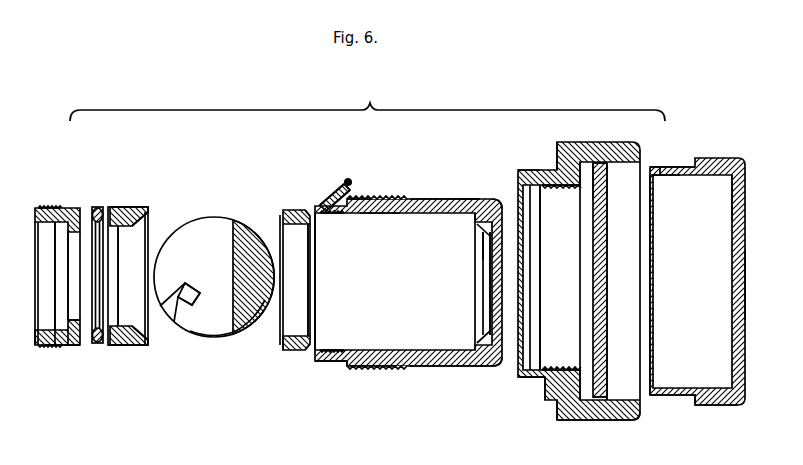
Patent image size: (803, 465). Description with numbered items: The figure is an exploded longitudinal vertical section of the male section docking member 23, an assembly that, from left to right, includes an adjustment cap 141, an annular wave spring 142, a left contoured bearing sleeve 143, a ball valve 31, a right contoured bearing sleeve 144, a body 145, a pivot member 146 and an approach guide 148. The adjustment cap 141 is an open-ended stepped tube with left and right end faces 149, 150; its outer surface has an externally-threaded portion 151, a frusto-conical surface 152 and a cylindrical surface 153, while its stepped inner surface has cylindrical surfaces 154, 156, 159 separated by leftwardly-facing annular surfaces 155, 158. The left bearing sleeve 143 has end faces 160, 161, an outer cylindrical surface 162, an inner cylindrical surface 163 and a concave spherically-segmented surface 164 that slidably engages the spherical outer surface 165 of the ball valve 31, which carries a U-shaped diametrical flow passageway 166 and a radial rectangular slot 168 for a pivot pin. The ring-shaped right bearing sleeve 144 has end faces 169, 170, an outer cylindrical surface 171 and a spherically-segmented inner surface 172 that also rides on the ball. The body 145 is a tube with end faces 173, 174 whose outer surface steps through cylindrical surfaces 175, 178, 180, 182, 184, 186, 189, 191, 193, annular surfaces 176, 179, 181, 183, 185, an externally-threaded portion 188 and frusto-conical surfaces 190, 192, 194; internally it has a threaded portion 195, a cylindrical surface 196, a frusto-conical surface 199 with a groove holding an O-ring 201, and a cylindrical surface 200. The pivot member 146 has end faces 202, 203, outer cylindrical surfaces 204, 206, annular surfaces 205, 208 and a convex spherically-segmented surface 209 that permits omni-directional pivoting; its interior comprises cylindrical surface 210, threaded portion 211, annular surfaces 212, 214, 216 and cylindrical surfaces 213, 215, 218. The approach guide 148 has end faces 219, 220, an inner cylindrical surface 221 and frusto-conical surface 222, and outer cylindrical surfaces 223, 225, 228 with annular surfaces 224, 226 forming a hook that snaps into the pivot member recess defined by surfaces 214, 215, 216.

The male section docking member 23 is at (367, 102).
The ball valve 31 is at (210, 213).
The adjustment cap 141 is at (57, 196).
The annular wave spring 142 is at (103, 201).
The left contoured bearing sleeve 143 is at (130, 201).
The right contoured bearing sleeve 144 is at (283, 206).
The body 145 is at (403, 193).
The pivot member 146 is at (574, 137).
The approach guide 148 is at (726, 146).
The left end face 149 is at (37, 341).
The right end face 150 is at (74, 344).
The externally-threaded portion 151 is at (58, 346).
The frusto-conical surface 152 is at (56, 350).
The outwardly-facing horizontal cylindrical surface 153 is at (67, 346).
The inwardly-facing horizontal cylindrical surface 154 is at (40, 206).
The leftwardly-facing annular vertical surface 155 is at (50, 346).
The inwardly-facing horizontal cylindrical surface 156 is at (67, 206).
The leftwardly-facing annular vertical surface 158 is at (62, 348).
The inwardly-facing horizontal cylindrical surface 159 is at (78, 230).
The left end face 160 is at (106, 346).
The right end face 161 is at (148, 346).
The outwardly-facing horizontal cylindrical surface 162 is at (131, 347).
The inwardly-facing horizontal cylindrical surface 163 is at (120, 262).
The annular concave spherically-segmented surface 164 is at (138, 237).
The spherical outer surface 165 is at (257, 343).
The U-shaped diametrical flow passageway 166 is at (200, 336).
The radially-extending rectangular slot 168 is at (186, 303).
The left end face 169 is at (282, 343).
The right end face 170 is at (308, 352).
The outwardly-facing horizontal cylindrical surface 171 is at (304, 349).
The inner surface 172 is at (303, 212).
The left end face 173 is at (317, 264).
The right end face 174 is at (483, 198).
The outwardly-facing horizontal cylindrical surface 175 is at (320, 362).
The leftwardly-facing annular vertical surface 176 is at (334, 199).
The outwardly-facing horizontal cylindrical surface 178 is at (343, 368).
The leftwardly-facing annular vertical surface 179 is at (338, 188).
The outwardly-facing horizontal cylindrical surface 180 is at (349, 369).
The leftwardly-facing annular vertical surface 181 is at (347, 179).
The outwardly-facing horizontal cylindrical surface 182 is at (353, 370).
The rightwardly-facing annular vertical surface 183 is at (350, 179).
The outwardly-facing horizontal cylindrical surface 184 is at (360, 370).
The rightwardly-facing annular vertical surface 185 is at (368, 196).
The outwardly-facing horizontal cylindrical surface 186 is at (367, 370).
The externally-threaded portion 188 is at (382, 370).
The outwardly-facing horizontal cylindrical surface 189 is at (428, 368).
The frusto-conical surface 190 is at (441, 198).
The outwardly-facing horizontal cylindrical surface 191 is at (456, 368).
The frusto-conical surface 192 is at (465, 197).
The outwardly-facing horizontal cylindrical surface 193 is at (483, 368).
The frusto-conical surface 194 is at (499, 367).
The internally-threaded portion 195 is at (328, 215).
The inwardly-facing horizontal cylindrical surface 196 is at (380, 215).
The frusto-conical surface 199 is at (484, 240).
The inwardly-facing horizontal cylindrical surface 200 is at (489, 262).
The O-ring 201 is at (482, 336).
The left end face 202 is at (520, 379).
The right end face 203 is at (641, 414).
The outwardly-facing horizontal cylindrical surface 204 is at (528, 171).
The leftwardly-facing annular vertical surface 205 is at (544, 401).
The outwardly-facing horizontal cylindrical surface 206 is at (556, 161).
The leftwardly-facing annular vertical surface 208 is at (559, 419).
The convex spherically-segmented surface 209 is at (592, 421).
The inwardly-facing horizontal cylindrical surface 210 is at (538, 208).
The internally-threaded portion 211 is at (542, 192).
The rightwardly-facing annular vertical surface 212 is at (588, 366).
The inwardly-facing horizontal cylindrical surface 213 is at (597, 195).
The rightwardly-facing annular vertical surface 214 is at (598, 360).
The inwardly-facing horizontal cylindrical surface 215 is at (596, 182).
The leftwardly-facing annular vertical surface 216 is at (609, 392).
The inwardly-facing horizontal cylindrical surface 218 is at (598, 170).
The left end face 219 is at (652, 256).
The right end face 220 is at (744, 284).
The inwardly-facing horizontal cylindrical surface 221 is at (660, 178).
The frusto-conical surface 222 is at (731, 190).
The outwardly-facing horizontal cylindrical surface 223 is at (655, 167).
The rightwardly-facing annular vertical surface 224 is at (662, 396).
The outwardly-facing horizontal cylindrical surface 225 is at (683, 166).
The leftwardly-facing annular vertical surface 226 is at (692, 400).
The outwardly-facing horizontal cylindrical surface 228 is at (702, 406).